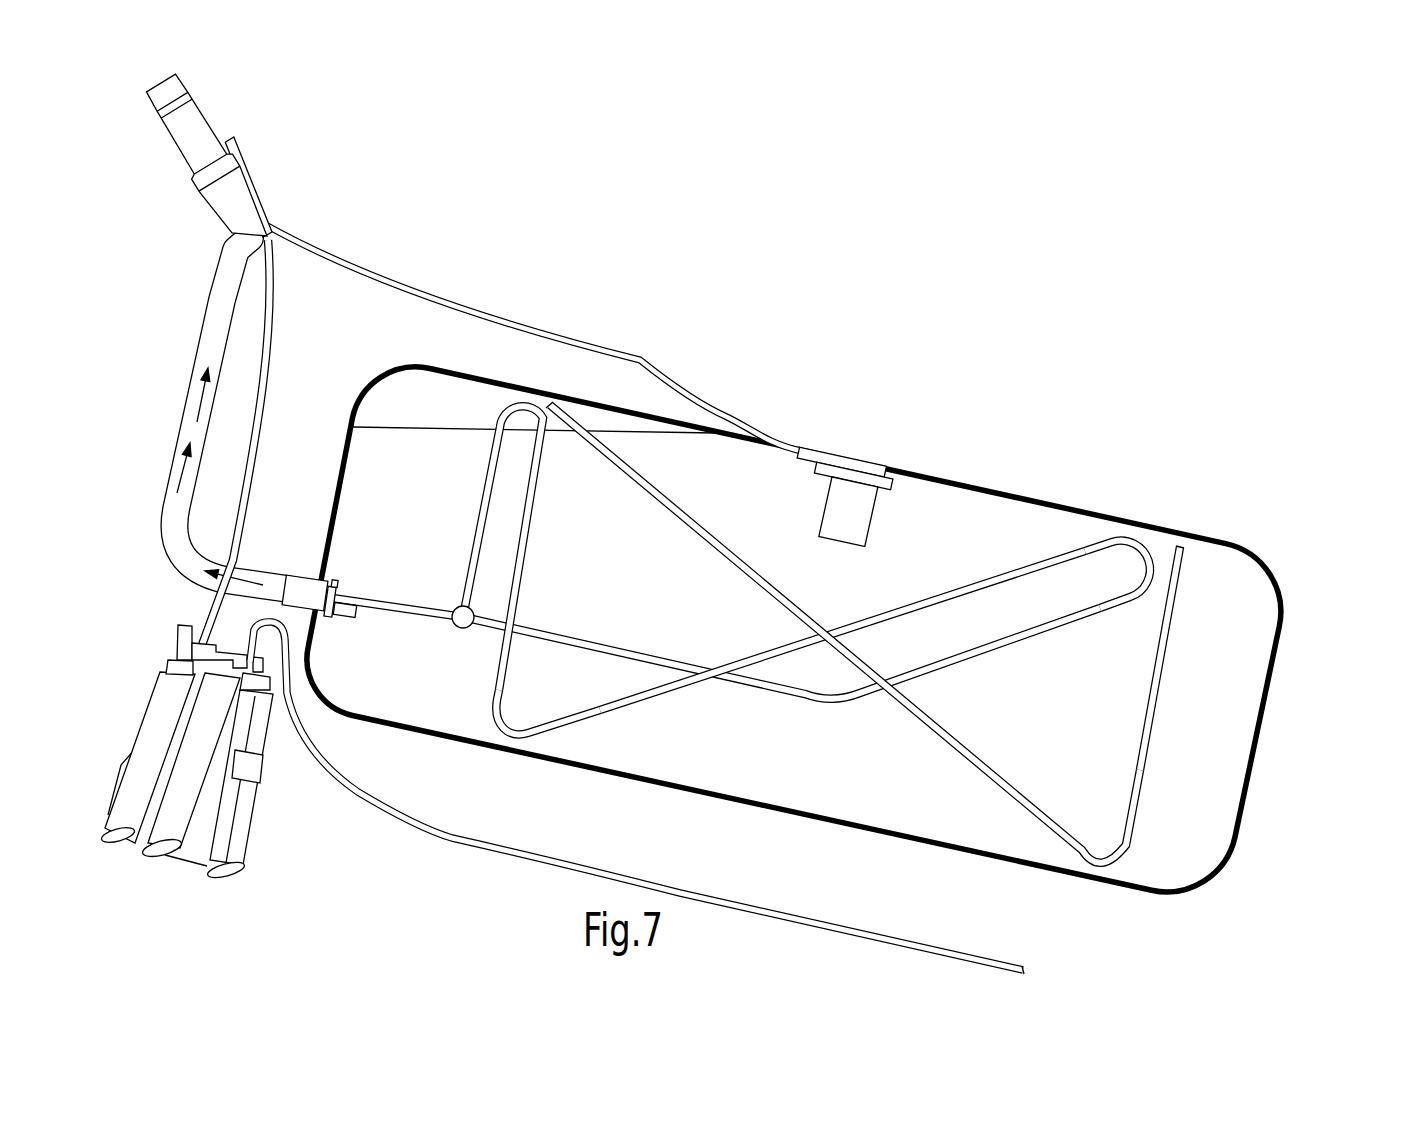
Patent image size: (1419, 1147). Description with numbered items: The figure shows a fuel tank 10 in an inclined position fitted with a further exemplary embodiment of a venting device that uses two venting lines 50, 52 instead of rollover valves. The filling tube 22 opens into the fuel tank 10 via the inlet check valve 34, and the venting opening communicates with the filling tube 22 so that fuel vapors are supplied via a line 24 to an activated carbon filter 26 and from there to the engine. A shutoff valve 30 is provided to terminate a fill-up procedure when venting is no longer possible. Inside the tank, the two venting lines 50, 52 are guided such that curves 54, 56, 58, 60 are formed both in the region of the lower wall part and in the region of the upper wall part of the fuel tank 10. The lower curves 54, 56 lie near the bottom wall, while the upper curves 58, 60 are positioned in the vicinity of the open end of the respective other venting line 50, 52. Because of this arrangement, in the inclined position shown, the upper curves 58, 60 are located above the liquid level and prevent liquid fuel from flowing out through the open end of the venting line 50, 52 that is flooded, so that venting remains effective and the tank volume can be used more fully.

The fuel tank 10 is at (1286, 580).
The filling tube 22 is at (218, 221).
The line 24 is at (264, 192).
The activated carbon filter 26 is at (148, 667).
The shutoff valve 30 is at (855, 473).
The inlet check valve 34 is at (316, 592).
The venting line 50 is at (1181, 582).
The venting line 52 is at (1076, 550).
The curve 54 is at (1113, 862).
The curve 56 is at (508, 733).
The upper curve 58 is at (518, 405).
The upper curve 60 is at (1132, 556).